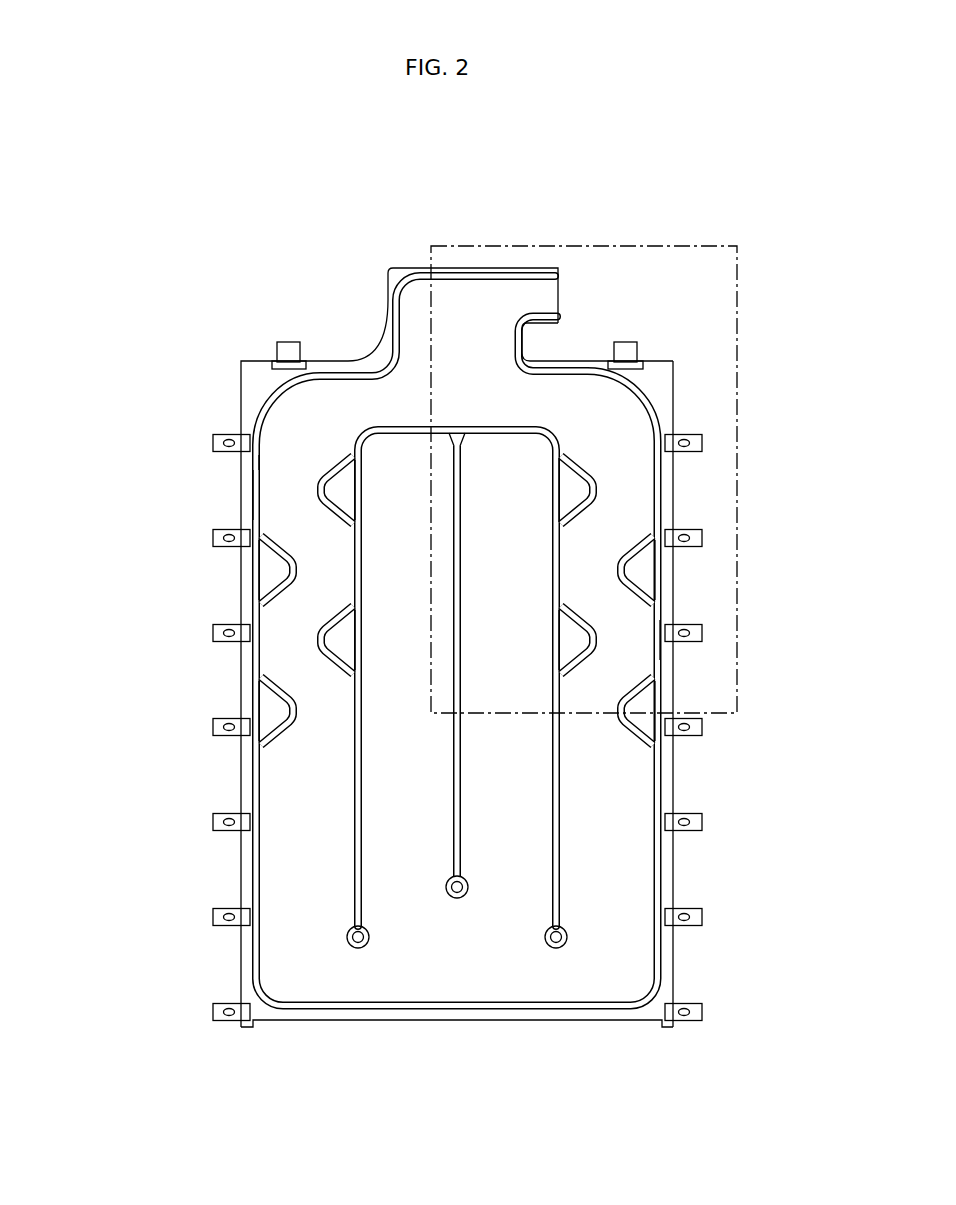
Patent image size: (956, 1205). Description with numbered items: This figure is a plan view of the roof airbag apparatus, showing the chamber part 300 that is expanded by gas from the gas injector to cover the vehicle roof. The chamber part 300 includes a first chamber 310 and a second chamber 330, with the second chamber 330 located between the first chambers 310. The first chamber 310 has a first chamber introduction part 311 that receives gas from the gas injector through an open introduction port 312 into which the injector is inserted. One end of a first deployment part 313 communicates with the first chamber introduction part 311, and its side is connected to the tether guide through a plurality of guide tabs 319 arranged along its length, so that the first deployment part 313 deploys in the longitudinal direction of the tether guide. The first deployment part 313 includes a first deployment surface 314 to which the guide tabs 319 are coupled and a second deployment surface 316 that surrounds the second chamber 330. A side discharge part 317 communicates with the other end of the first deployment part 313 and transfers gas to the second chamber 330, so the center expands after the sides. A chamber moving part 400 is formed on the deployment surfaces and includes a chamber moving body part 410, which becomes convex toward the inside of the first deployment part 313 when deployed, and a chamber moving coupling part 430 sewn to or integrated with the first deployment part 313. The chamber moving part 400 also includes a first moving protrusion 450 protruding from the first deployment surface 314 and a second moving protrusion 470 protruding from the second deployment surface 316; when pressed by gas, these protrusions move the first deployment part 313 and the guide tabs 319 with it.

The chamber part 300 is at (165, 570).
The first chamber 310 is at (165, 171).
The first chamber introduction part 311 is at (497, 300).
The introduction port 312 is at (560, 298).
The first deployment part 313 is at (305, 211).
The first deployment surface 314 is at (260, 483).
The second deployment surface 316 is at (355, 557).
The side discharge part 317 is at (352, 977).
The guide tab 319 is at (213, 533).
The second chamber 330 is at (403, 910).
The chamber moving part 400 is at (806, 660).
The chamber moving body part 410 is at (588, 483).
The chamber moving coupling part 430 is at (562, 463).
The first moving protrusion 450 is at (638, 740).
The second moving protrusion 470 is at (583, 660).